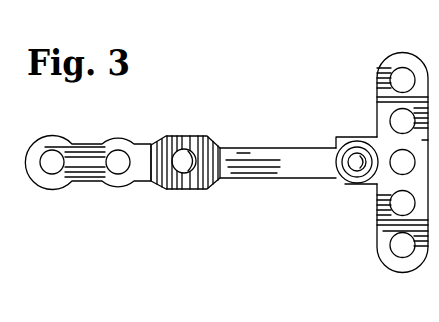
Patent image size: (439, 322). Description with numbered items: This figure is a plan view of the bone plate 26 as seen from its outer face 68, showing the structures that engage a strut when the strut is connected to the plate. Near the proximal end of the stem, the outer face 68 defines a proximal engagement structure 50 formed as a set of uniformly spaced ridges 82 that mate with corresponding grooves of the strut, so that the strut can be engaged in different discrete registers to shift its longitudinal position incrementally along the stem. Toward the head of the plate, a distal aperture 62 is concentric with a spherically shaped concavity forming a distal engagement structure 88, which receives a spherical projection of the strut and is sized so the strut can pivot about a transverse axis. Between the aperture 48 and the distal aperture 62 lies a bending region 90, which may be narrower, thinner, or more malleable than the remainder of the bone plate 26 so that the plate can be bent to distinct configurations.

The bone plate 26 is at (228, 125).
The aperture 48 is at (186, 170).
The proximal engagement structure 50 is at (168, 197).
The distal aperture 62 is at (362, 166).
The outer face 68 is at (297, 170).
The ridges 82 is at (178, 143).
The distal engagement structure 88 is at (357, 152).
The bending region 90 is at (253, 148).